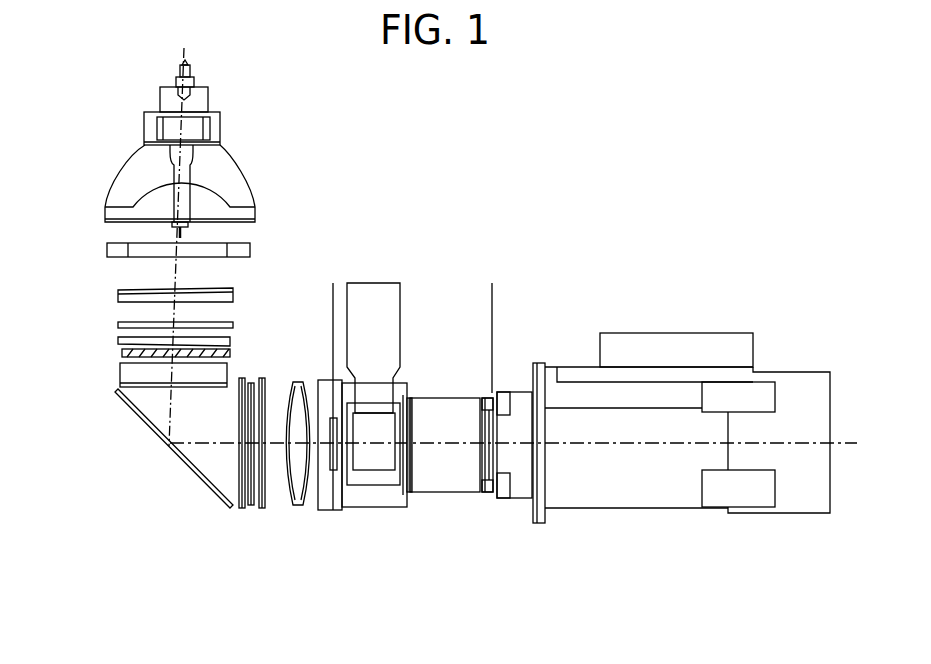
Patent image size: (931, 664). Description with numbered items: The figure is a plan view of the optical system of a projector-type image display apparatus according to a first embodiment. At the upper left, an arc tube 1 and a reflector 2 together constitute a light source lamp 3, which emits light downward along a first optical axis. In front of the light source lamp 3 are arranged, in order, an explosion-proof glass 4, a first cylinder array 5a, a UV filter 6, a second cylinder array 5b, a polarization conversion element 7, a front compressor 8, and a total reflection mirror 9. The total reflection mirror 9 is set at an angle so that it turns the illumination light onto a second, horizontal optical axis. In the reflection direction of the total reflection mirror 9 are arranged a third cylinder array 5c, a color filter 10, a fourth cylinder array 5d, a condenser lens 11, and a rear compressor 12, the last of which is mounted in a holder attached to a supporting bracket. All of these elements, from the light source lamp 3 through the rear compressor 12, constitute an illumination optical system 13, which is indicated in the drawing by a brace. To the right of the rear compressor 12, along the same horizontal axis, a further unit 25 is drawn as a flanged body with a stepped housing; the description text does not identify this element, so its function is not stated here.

The arc tube 1 is at (197, 155).
The reflector 2 is at (130, 175).
The light source lamp 3 is at (225, 183).
The explosion-proof glass 4 is at (107, 243).
The first cylinder array 5a is at (118, 292).
The UV filter 6 is at (118, 325).
The second cylinder array 5b is at (118, 342).
The polarization conversion element 7 is at (120, 352).
The front compressor 8 is at (122, 375).
The total reflection mirror 9 is at (185, 468).
The third cylinder array 5c is at (240, 510).
The color filter 10 is at (251, 508).
The fourth cylinder array 5d is at (262, 510).
The condenser lens 11 is at (298, 508).
The rear compressor 12 is at (325, 500).
The illumination optical system 13 is at (283, 85).
The camera 25 is at (637, 492).